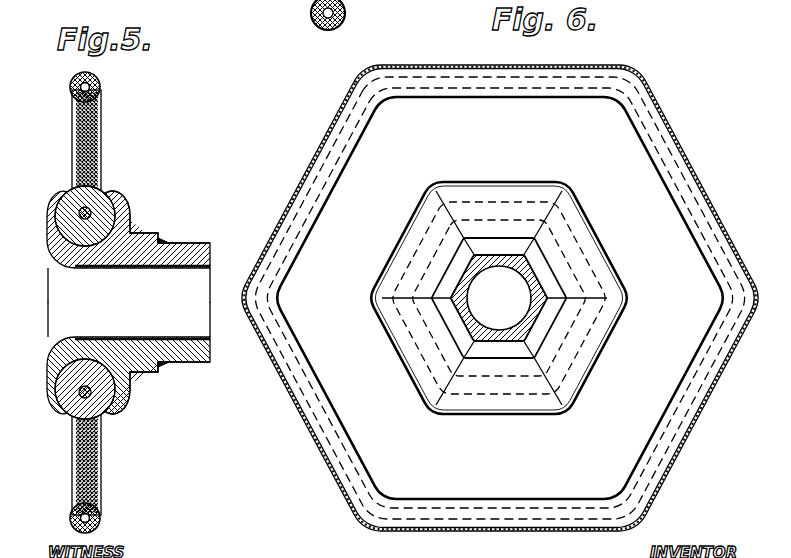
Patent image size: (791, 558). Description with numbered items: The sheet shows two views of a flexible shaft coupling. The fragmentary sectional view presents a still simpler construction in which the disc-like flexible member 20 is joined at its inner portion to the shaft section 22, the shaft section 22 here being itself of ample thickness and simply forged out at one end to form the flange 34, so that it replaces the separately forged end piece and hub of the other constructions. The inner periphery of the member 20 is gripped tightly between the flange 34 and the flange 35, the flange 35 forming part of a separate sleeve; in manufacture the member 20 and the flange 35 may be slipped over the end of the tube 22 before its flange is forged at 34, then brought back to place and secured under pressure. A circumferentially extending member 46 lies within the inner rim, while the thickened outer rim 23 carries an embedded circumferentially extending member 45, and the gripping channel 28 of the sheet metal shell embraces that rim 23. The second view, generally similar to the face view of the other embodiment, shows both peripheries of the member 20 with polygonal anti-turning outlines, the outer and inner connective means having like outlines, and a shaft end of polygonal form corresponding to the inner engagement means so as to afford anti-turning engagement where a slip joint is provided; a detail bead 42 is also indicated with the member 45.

In FIG. 5, the disc-like flexible member 20 is at (101, 146).
In FIG. 6, the disc-like flexible member 20 is at (499, 298).
In FIG. 5, the shaft section 22 is at (200, 243).
In FIG. 6, the shaft section 22 is at (521, 270).
In FIG. 5, the rim 23 is at (100, 88).
In FIG. 6, the gripping channel 28 is at (676, 143).
In FIG. 5, the flange 34 is at (47, 206).
In FIG. 5, the flange 35 is at (126, 210).
In FIG. 6, the flange 35 is at (524, 194).
In FIG. 6, the cord bead 42 is at (349, 15).
In FIG. 5, the embedded circumferential member 45 is at (78, 88).
In FIG. 6, the embedded circumferential member 45 is at (515, 109).
In FIG. 5, the circumferentially extending member 46 is at (83, 216).
In FIG. 6, the circumferentially extending member 46 is at (574, 352).